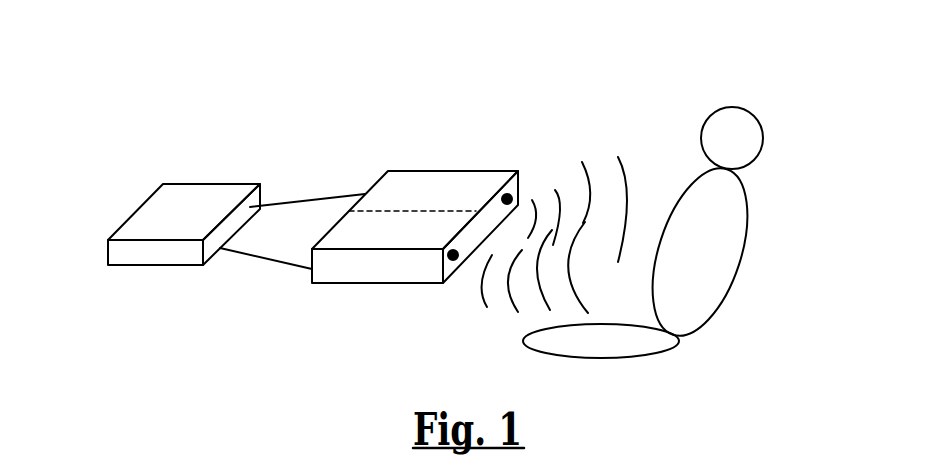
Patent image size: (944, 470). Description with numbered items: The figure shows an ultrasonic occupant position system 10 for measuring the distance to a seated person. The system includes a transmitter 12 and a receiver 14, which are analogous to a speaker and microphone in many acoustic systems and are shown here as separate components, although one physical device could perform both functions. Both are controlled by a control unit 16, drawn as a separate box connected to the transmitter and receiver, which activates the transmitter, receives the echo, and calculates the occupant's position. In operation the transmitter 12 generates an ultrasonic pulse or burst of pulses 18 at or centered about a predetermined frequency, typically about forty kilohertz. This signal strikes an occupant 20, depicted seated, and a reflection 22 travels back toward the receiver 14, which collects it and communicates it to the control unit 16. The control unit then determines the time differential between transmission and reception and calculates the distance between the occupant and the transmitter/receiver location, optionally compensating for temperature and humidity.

The occupant position system 10 is at (281, 87).
The transmitter 12 is at (401, 237).
The receiver 14 is at (360, 273).
The control unit 16 is at (179, 208).
The ultrasonic pulse or burst of pulses 18 is at (610, 155).
The occupant 20 is at (705, 266).
The reflection 22 is at (500, 311).